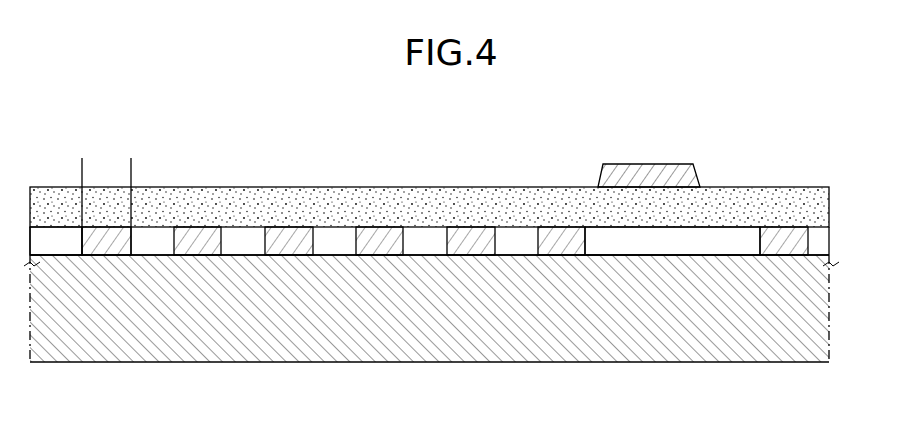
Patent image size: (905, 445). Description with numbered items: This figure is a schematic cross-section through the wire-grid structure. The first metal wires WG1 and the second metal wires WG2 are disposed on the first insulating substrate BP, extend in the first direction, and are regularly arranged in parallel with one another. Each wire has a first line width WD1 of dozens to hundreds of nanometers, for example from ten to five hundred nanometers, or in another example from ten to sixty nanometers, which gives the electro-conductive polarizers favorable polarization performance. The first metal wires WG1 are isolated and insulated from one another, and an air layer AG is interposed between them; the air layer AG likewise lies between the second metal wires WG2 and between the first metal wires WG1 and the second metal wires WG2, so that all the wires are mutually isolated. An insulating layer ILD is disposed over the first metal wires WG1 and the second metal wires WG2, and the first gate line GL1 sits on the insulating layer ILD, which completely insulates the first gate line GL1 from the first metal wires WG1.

The first line width WD1 is at (131, 163).
The first gate line GL1 is at (650, 172).
The insulating layer ILD is at (829, 208).
The first insulating substrate BP is at (829, 313).
The air layer AG is at (53, 247).
The first metal wires WG1 is at (110, 247).
The second metal wires WG2 is at (783, 247).